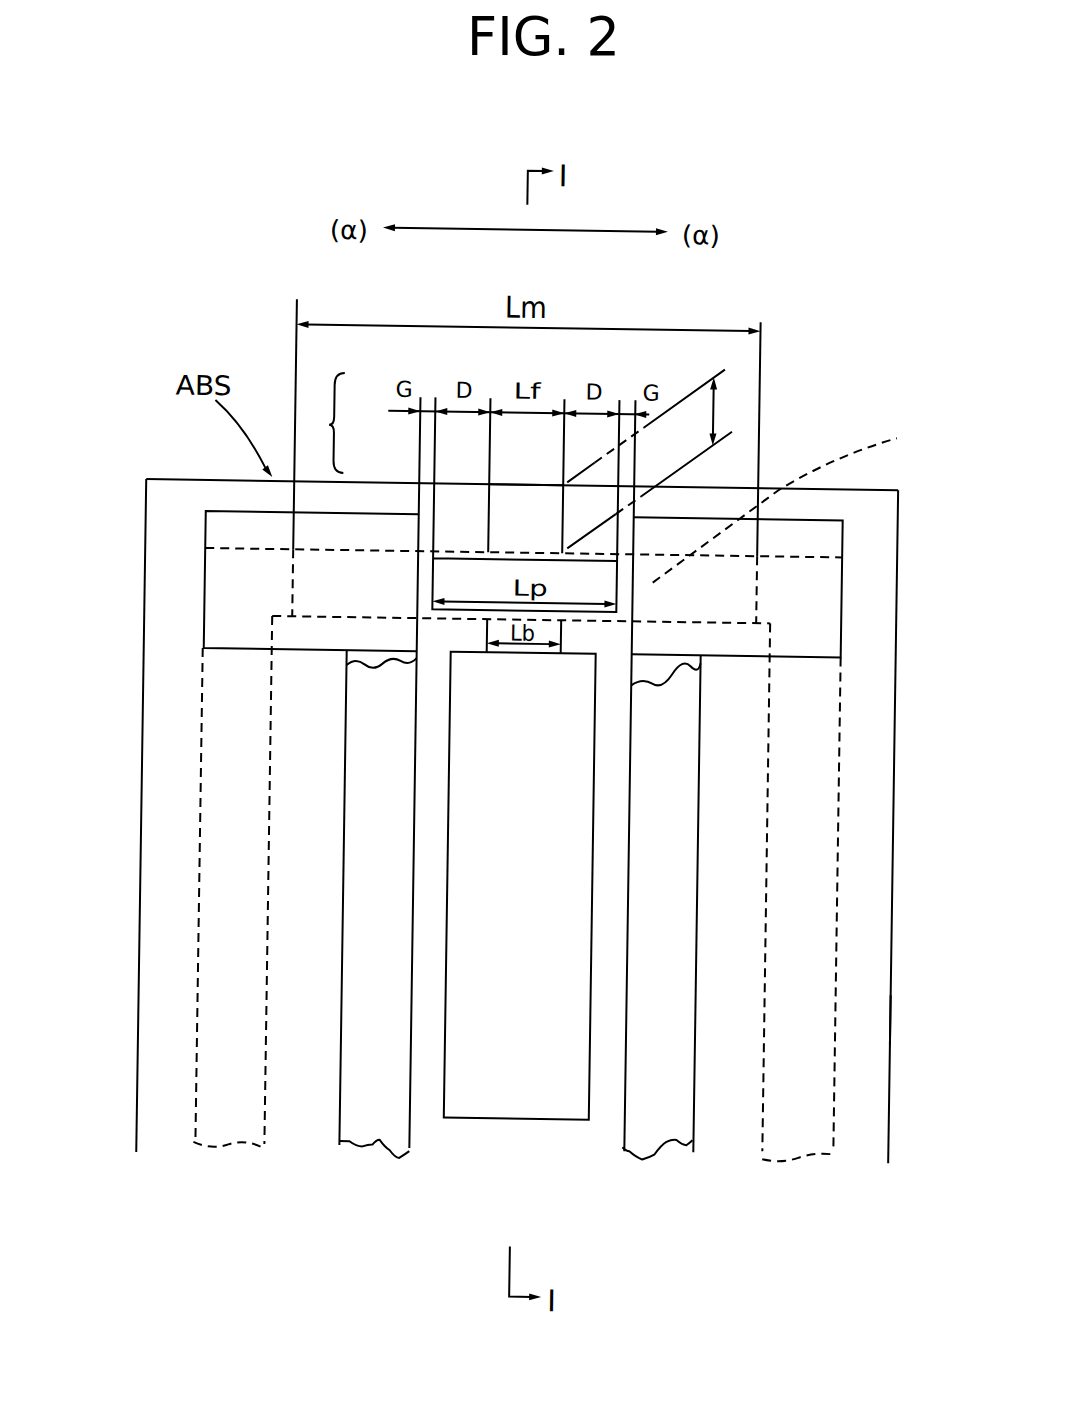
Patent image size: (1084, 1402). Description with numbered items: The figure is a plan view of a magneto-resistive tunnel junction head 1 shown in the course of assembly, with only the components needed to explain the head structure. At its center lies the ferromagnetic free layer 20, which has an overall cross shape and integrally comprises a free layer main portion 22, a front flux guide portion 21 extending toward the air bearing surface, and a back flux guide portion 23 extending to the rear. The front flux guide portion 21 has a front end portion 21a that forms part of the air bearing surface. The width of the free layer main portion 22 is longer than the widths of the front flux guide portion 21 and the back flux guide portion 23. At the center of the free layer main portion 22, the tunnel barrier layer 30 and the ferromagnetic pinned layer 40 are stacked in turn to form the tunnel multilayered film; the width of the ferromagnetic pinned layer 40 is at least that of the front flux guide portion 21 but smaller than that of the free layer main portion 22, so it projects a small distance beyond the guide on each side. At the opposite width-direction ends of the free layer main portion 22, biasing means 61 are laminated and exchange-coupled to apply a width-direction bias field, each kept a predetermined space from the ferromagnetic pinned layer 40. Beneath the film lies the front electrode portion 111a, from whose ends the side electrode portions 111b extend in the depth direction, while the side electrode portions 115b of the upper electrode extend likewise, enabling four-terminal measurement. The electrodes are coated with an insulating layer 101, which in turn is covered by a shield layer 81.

The magneto-resistive tunnel junction head 1 is at (788, 363).
The ferromagnetic free layer 20 is at (458, 513).
The front flux guide portion 21 is at (504, 515).
The front end portion 21a is at (514, 489).
The free layer main portion 22 is at (420, 580).
The back flux guide portion 23 is at (485, 636).
The tunnel barrier layer 30 is at (651, 745).
The ferromagnetic pinned layer 40 is at (586, 581).
The biasing means 61 is at (217, 530).
The shield layer 81 is at (871, 1021).
The insulating layer 101 is at (871, 948).
The front electrode portion 111a is at (800, 501).
The side electrode portion 111b is at (214, 794).
The side electrode portion 115b is at (360, 951).